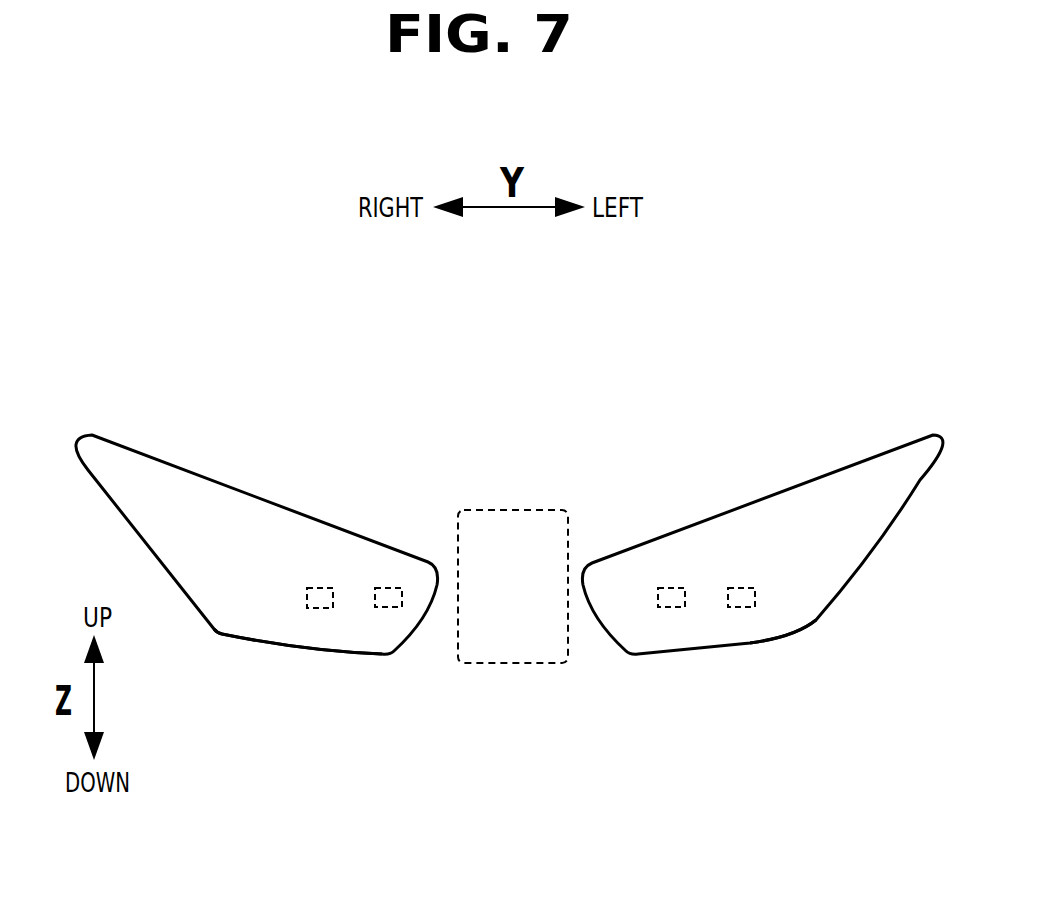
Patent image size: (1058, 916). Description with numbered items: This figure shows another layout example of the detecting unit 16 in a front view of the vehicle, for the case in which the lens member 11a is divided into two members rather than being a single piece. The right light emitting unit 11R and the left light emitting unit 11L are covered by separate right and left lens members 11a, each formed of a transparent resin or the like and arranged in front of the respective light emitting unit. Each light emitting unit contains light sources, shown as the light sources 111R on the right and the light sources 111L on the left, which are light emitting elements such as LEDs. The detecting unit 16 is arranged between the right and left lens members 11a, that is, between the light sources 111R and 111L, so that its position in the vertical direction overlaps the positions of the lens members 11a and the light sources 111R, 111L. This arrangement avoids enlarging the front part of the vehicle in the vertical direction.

The light emitting unit 11R is at (258, 468).
The light emitting unit 11L is at (768, 448).
The lens member 11a is at (232, 635).
The light source 111R is at (320, 608).
The light source 111L is at (672, 607).
The detecting unit 16 is at (517, 663).